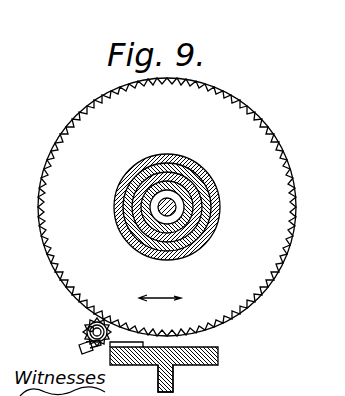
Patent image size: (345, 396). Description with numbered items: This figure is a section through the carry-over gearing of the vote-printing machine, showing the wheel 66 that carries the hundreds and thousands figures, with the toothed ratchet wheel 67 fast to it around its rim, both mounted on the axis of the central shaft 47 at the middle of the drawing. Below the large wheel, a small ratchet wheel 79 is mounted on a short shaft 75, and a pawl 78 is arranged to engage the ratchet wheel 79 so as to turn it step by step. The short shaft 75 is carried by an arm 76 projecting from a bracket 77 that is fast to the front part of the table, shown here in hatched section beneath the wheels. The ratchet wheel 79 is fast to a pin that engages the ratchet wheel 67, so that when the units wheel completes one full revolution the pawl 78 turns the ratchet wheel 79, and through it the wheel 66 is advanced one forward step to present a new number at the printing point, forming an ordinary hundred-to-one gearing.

The wheel 66 is at (268, 125).
The ratchet wheel 67 is at (270, 162).
The central shaft 47 is at (173, 207).
The short shaft 75 is at (87, 332).
The ratchet wheel 79 is at (88, 327).
The pawl 78 is at (80, 344).
The bracket 77 is at (218, 358).
The arm 76 is at (145, 365).